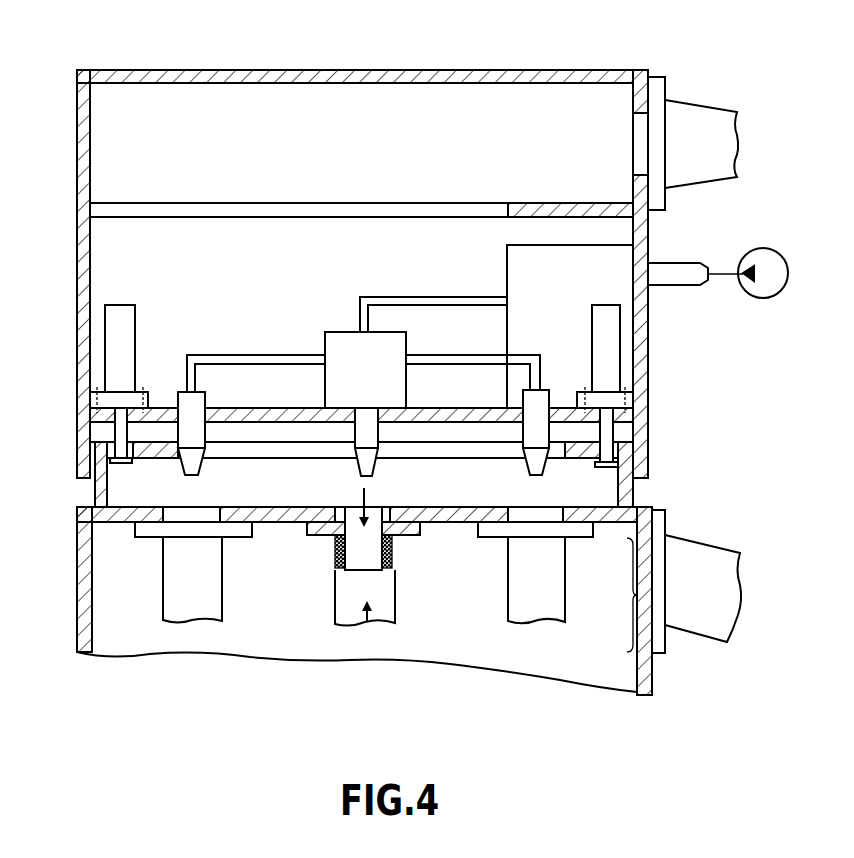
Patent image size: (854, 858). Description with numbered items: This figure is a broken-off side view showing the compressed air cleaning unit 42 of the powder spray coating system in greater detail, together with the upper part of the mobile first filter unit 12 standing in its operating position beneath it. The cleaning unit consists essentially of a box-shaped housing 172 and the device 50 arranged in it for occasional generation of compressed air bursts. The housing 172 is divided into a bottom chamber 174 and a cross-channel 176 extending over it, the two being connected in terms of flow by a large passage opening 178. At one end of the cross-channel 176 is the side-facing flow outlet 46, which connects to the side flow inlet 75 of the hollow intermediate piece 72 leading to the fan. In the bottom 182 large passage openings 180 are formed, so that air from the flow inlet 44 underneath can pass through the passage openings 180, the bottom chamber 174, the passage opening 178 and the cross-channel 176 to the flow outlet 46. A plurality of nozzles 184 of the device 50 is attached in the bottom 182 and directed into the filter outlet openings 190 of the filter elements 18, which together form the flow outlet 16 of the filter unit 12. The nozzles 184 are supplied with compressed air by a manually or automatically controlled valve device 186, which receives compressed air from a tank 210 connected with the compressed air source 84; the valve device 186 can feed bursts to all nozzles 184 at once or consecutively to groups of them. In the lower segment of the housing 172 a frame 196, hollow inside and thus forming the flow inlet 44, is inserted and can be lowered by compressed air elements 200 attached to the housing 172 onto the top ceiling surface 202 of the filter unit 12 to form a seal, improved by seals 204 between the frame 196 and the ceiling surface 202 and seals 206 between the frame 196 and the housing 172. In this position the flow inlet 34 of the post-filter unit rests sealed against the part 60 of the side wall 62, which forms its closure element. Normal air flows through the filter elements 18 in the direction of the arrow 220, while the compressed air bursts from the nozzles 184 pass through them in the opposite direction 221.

The first filter unit 12 is at (108, 618).
The flow outlet 16 is at (207, 508).
The filter element 18 is at (195, 612).
The flow inlet 34 is at (660, 196).
The compressed air cleaning unit 42 is at (80, 273).
The flow inlet 44 is at (445, 452).
The flow outlet 46 is at (636, 130).
The device for occasional generation of compressed air bursts 50 is at (278, 315).
The part 60 is at (625, 587).
The side wall 62 is at (655, 678).
The intermediate piece 72 is at (713, 122).
The flow inlet 75 is at (662, 138).
The compressed air source 84 is at (755, 293).
The housing 172 is at (78, 158).
The bottom chamber 174 is at (105, 292).
The cross-channel 176 is at (222, 97).
The passage opening 178 is at (344, 205).
The passage openings 180 is at (240, 415).
The bottom 182 is at (160, 405).
The nozzles 184 is at (188, 470).
The valve device 186 is at (342, 330).
The filter outlet openings 190 is at (185, 522).
The frame 196 is at (650, 432).
The compressed air elements 200 is at (115, 356).
The top ceiling surface 202 is at (500, 488).
The seals 204 is at (650, 505).
The seals 206 is at (655, 458).
The tank 210 is at (615, 263).
The arrow 220 is at (367, 637).
The opposite direction 221 is at (393, 553).